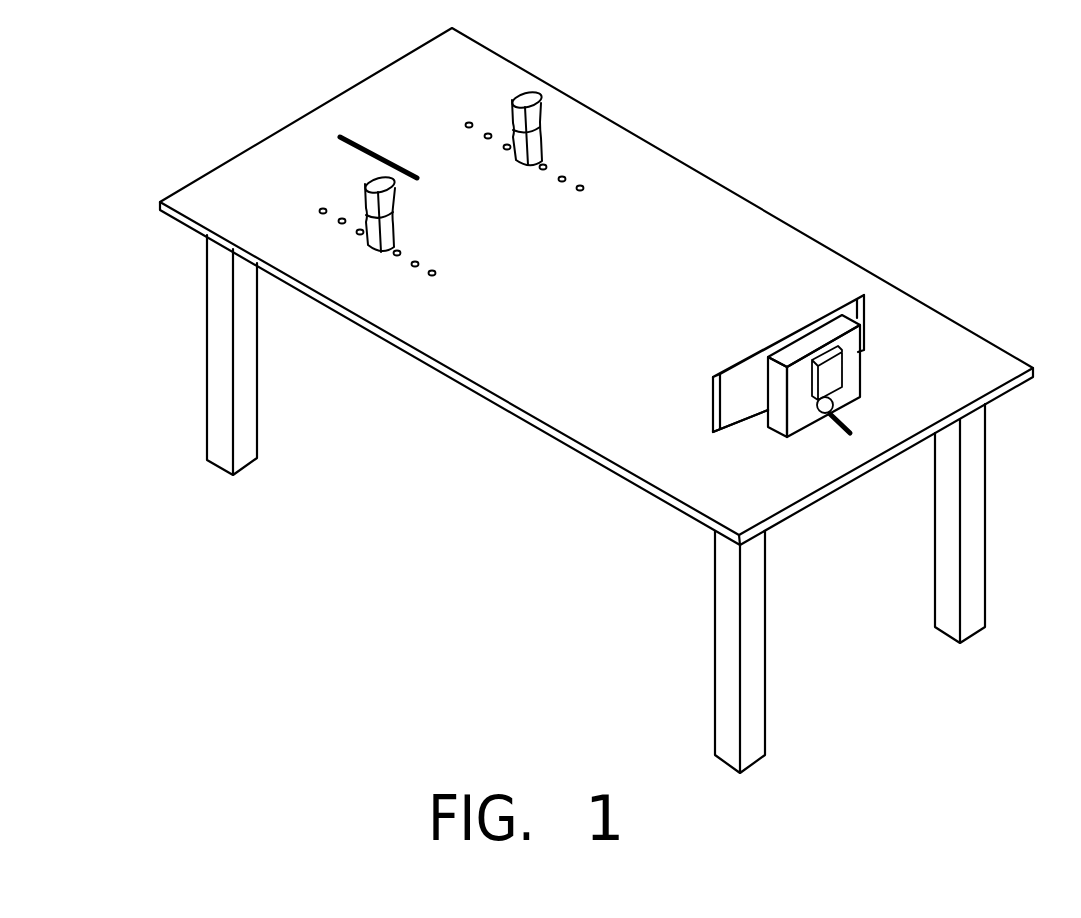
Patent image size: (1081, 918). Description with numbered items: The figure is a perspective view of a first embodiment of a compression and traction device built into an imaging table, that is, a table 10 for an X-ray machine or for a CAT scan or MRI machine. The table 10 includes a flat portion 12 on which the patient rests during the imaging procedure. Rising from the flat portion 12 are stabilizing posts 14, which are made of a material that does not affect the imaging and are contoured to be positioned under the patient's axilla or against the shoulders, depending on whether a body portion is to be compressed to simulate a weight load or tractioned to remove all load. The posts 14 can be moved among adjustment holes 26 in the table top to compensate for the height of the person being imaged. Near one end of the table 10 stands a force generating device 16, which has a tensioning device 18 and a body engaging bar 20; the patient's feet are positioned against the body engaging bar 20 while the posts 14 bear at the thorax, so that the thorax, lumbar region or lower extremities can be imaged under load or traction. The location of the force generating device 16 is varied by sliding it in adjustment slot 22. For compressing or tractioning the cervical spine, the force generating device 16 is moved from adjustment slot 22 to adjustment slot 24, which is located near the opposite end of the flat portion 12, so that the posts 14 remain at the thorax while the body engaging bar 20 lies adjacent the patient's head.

The table 10 is at (798, 218).
The flat portion 12 is at (680, 162).
The stabilizing posts 14 is at (540, 97).
The force generating device 16 is at (853, 290).
The tensioning device 18 is at (798, 433).
The body engaging bar 20 is at (715, 432).
The adjustment slot 22 is at (850, 428).
The adjustment slot 24 is at (343, 134).
The adjustment holes 26 is at (580, 192).